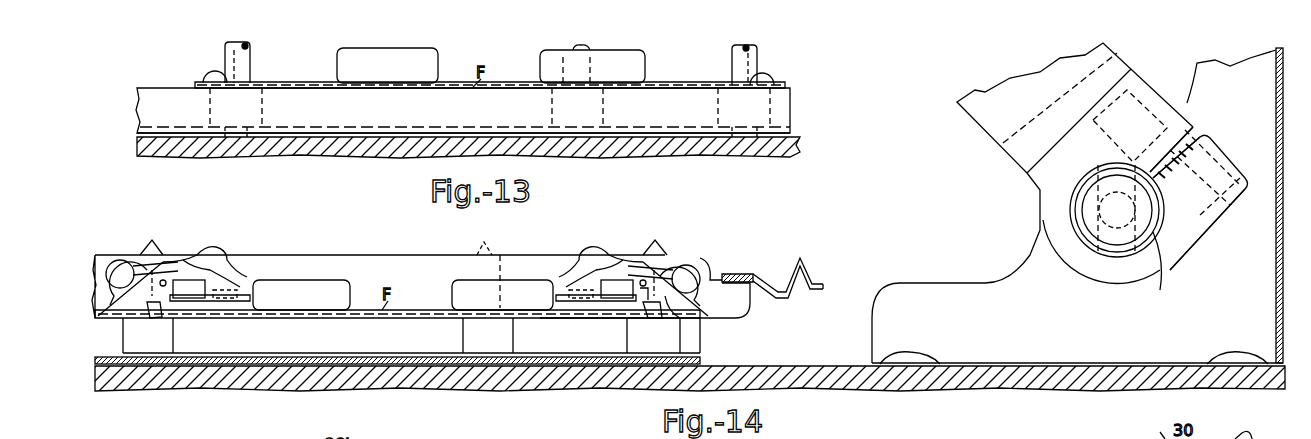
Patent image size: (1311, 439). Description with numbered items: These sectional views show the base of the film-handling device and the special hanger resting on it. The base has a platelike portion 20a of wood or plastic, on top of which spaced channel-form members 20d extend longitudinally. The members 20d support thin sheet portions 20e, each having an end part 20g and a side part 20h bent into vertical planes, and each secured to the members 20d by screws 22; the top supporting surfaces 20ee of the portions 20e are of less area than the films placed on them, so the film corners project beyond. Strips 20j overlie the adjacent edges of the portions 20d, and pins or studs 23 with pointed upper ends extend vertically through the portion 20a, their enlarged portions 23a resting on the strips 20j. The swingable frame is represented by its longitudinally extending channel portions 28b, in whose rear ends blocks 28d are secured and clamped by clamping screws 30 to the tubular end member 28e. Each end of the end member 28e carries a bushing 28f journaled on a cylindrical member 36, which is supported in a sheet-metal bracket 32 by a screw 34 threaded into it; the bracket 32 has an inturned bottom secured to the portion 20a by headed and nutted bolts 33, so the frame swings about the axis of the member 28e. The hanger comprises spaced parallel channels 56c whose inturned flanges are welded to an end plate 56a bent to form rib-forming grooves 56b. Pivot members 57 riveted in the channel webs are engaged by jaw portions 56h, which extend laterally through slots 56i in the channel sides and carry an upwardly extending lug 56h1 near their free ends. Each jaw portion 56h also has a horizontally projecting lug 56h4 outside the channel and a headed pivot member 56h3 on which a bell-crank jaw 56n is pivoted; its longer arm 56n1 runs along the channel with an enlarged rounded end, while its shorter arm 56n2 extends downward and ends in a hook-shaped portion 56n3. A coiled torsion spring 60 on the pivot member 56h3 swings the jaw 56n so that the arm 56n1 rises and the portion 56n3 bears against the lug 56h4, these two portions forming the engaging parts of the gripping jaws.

In FIG. 13, the platelike portion 20a is at (792, 146).
In FIG. 14, the platelike portion 20a is at (822, 366).
In FIG. 13, the spaced member 20d is at (160, 97).
In FIG. 13, the sheet portion 20e is at (420, 90).
In FIG. 14, the sheet portion 20e is at (250, 318).
In FIG. 14, the top supporting surface 20ee is at (523, 320).
In FIG. 13, the end part 20g is at (237, 63).
In FIG. 13, the side part 20h is at (547, 62).
In FIG. 14, the side part 20h is at (318, 280).
In FIG. 13, the strip 20j is at (775, 127).
In FIG. 14, the strip 20j is at (702, 362).
In FIG. 13, the screw 22 is at (213, 78).
In FIG. 13, the pin or stud 23 is at (590, 46).
In FIG. 14, the pin or stud 23 is at (478, 270).
In FIG. 14, the enlarged portion 23a is at (470, 337).
In FIG. 14, the longitudinally extending portion 28b is at (1000, 110).
In FIG. 14, the block 28d is at (1216, 160).
In FIG. 14, the end member 28e is at (1161, 290).
In FIG. 14, the bushing 28f is at (1182, 252).
In FIG. 14, the clamping screw 30 is at (1175, 150).
In FIG. 14, the bracket 32 is at (952, 292).
In FIG. 14, the headed and nutted bolt 33 is at (930, 355).
In FIG. 14, the screw 34 is at (1117, 218).
In FIG. 14, the cylindrical member 36 is at (1082, 258).
In FIG. 14, the end plate 56a is at (735, 274).
In FIG. 14, the rib-forming groove 56b is at (798, 265).
In FIG. 14, the channel 56c is at (398, 254).
In FIG. 14, the jaw portion 56h is at (252, 300).
In FIG. 14, the lug 56h1 is at (640, 262).
In FIG. 14, the headed pivot member 56h3 is at (113, 258).
In FIG. 14, the horizontally projecting lug 56h4 is at (165, 262).
In FIG. 14, the slot 56i is at (205, 280).
In FIG. 14, the jaw 56n is at (192, 255).
In FIG. 14, the arm 56n1 is at (223, 250).
In FIG. 14, the arm 56n2 is at (678, 312).
In FIG. 14, the hook-shaped terminal portion 56n3 is at (404, 325).
In FIG. 14, the pivot member 57 is at (226, 285).
In FIG. 14, the coiled torsion spring 60 is at (118, 300).